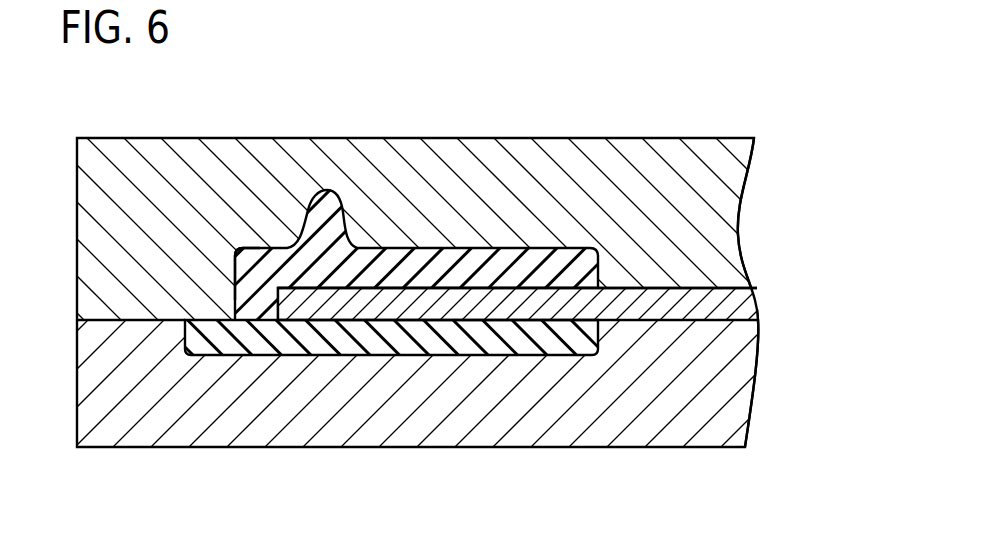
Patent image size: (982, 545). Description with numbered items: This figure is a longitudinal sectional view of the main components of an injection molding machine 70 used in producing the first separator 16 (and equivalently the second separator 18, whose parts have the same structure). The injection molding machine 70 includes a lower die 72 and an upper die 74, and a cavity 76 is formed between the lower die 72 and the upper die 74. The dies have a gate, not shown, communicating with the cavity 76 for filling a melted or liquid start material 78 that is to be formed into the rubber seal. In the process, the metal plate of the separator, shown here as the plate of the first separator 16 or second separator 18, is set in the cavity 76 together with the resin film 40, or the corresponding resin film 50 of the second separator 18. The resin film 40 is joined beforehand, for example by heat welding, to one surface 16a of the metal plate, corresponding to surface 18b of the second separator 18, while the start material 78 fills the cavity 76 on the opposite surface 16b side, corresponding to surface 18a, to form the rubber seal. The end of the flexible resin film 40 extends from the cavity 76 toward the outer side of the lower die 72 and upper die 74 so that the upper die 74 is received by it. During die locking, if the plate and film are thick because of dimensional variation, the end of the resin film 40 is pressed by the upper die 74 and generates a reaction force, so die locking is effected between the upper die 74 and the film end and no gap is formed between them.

The injection molding machine 70 is at (573, 44).
The lower die 72 is at (240, 417).
The upper die 74 is at (222, 165).
The cavity 76 is at (243, 288).
The start material 78 is at (543, 253).
The first separator 16 is at (547, 304).
The second separator 18 is at (733, 303).
The surface of the first separator 16a is at (518, 413).
The surface of the second separator 18b is at (421, 328).
The surface of the first separator 16b is at (517, 183).
The surface of the second separator 18a is at (422, 282).
The resin film 40 is at (382, 413).
The resin film 50 is at (550, 335).